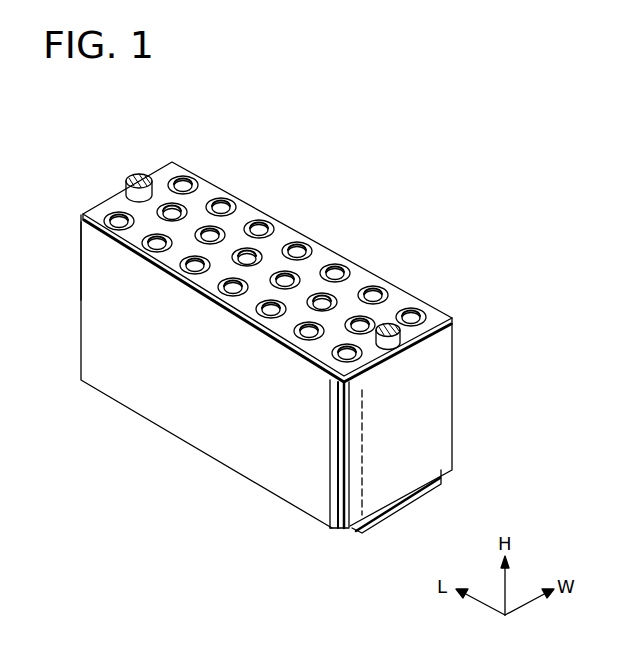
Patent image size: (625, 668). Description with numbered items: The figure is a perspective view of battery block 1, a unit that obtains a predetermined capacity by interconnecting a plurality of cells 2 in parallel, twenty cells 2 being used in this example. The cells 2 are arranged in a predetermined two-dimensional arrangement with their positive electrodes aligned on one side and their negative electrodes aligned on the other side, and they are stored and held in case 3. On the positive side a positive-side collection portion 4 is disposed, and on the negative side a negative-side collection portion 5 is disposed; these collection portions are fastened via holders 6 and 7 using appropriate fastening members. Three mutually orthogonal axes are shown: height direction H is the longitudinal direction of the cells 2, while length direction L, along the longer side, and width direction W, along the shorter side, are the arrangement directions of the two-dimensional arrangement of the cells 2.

The battery block 1 is at (278, 192).
The cell 2 is at (327, 507).
The case 3 is at (312, 496).
The positive-side collection portion 4 is at (360, 264).
The negative-side collection portion 5 is at (226, 464).
The holder 6 is at (431, 423).
The holder 7 is at (80, 308).